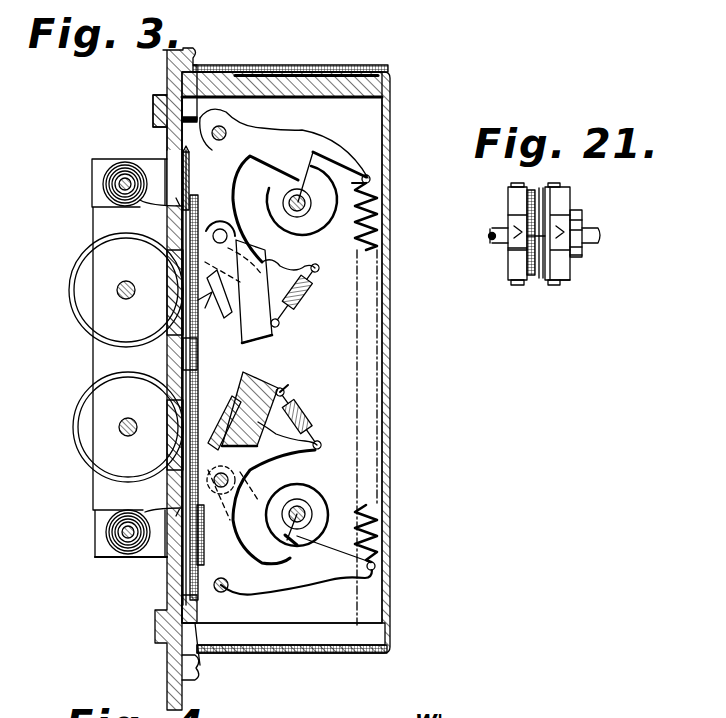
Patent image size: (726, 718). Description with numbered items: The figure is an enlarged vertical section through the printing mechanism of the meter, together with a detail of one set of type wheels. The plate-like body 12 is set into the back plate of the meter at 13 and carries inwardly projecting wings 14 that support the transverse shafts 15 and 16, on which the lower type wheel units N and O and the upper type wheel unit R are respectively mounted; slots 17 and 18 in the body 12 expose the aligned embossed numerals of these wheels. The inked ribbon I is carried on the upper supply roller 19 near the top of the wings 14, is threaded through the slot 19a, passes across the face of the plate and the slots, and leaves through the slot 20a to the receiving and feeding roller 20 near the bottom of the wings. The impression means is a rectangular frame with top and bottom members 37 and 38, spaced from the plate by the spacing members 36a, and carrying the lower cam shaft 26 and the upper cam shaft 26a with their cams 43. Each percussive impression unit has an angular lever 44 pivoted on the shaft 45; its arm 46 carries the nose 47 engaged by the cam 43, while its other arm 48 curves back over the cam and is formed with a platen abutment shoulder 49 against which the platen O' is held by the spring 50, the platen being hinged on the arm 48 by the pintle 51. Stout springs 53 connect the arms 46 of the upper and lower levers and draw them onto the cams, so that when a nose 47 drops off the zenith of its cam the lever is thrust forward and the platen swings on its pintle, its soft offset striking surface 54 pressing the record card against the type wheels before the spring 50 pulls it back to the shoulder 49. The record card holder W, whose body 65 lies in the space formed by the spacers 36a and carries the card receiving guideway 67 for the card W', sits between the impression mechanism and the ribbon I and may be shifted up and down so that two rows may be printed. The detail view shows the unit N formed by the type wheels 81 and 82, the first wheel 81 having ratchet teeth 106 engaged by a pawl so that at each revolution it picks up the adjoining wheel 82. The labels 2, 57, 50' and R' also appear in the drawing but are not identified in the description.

In FIG. 3, the casing 2 is at (385, 140).
In FIG. 3, the plate-like body 12 is at (165, 135).
In FIG. 3, the back plate setting 13 is at (152, 100).
In FIG. 3, the inwardly projecting wings 14 is at (103, 505).
In FIG. 3, the transverse shaft 15 is at (120, 430).
In FIG. 21, the transverse shaft 15 is at (490, 238).
In FIG. 3, the transverse shaft 16 is at (118, 287).
In FIG. 3, the slot 17 is at (182, 452).
In FIG. 3, the slot 18 is at (182, 318).
In FIG. 3, the upper supply roller 19 is at (104, 187).
In FIG. 3, the slot 19a is at (178, 204).
In FIG. 3, the receiving and feeding roller 20 is at (125, 540).
In FIG. 3, the slot 20a is at (183, 520).
In FIG. 3, the lower cam shaft 26 is at (305, 505).
In FIG. 3, the second cam shaft 26a is at (300, 212).
In FIG. 3, the spacing members 36a is at (190, 105).
In FIG. 3, the top member 37 is at (380, 95).
In FIG. 3, the bottom member 38 is at (320, 652).
In FIG. 3, the cam 43 is at (370, 190).
In FIG. 3, the angular lever 44 is at (240, 170).
In FIG. 3, the shaft 45 is at (226, 130).
In FIG. 3, the arm 46 is at (300, 128).
In FIG. 3, the nose 47 is at (308, 160).
In FIG. 3, the arm 48 is at (225, 520).
In FIG. 3, the platen abutment shoulder 49 is at (320, 270).
In FIG. 3, the spring 50 is at (312, 357).
In FIG. 3, the spring end 50' is at (316, 396).
In FIG. 3, the pintle 51 is at (235, 235).
In FIG. 3, the stout spring 53 is at (377, 212).
In FIG. 3, the offset striking surface 54 is at (185, 342).
In FIG. 3, the top wall 57 is at (289, 84).
In FIG. 3, the body portion 65 is at (183, 595).
In FIG. 3, the card receiving guideway 67 is at (224, 630).
In FIG. 21, the type wheel 81 is at (585, 293).
In FIG. 21, the type wheel 82 is at (514, 255).
In FIG. 21, the ratchet teeth 106 is at (582, 256).
In FIG. 3, the inked ribbon I is at (188, 362).
In FIG. 3, the record card holder W is at (155, 368).
In FIG. 3, the record card W' is at (215, 305).
In FIG. 3, the upper type wheel unit R is at (106, 290).
In FIG. 3, the roller lever R' is at (295, 336).
In FIG. 3, the lower type wheel unit O is at (115, 437).
In FIG. 3, the platen O' is at (262, 403).
In FIG. 21, the lower type wheel unit N is at (562, 230).